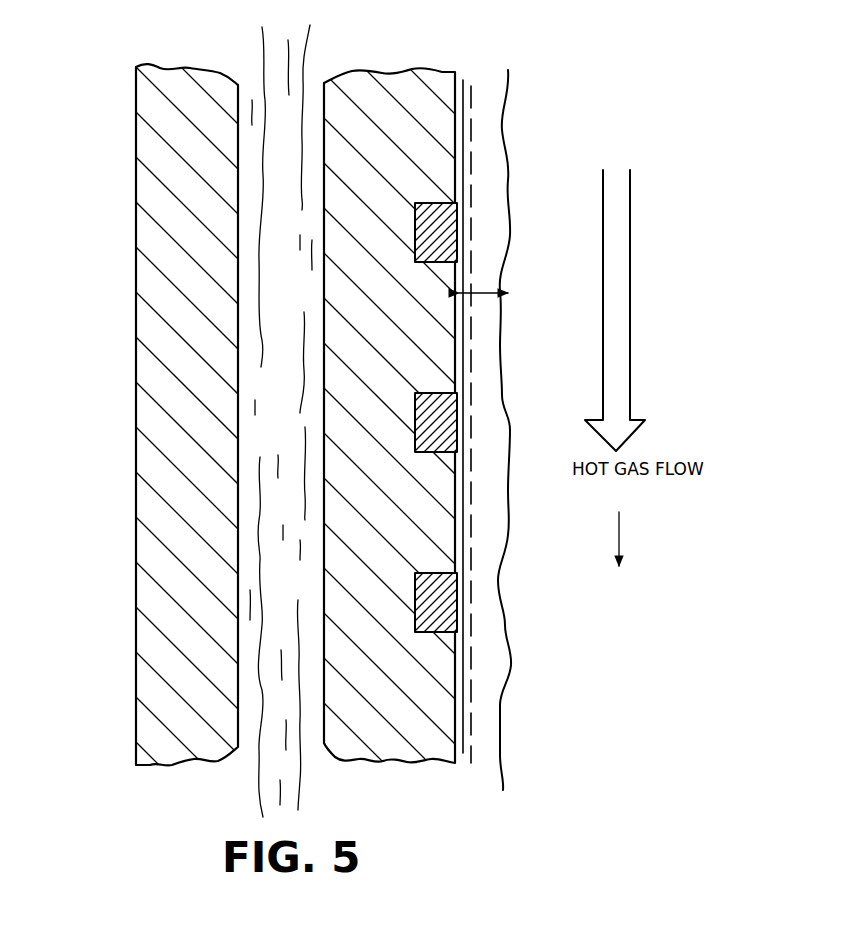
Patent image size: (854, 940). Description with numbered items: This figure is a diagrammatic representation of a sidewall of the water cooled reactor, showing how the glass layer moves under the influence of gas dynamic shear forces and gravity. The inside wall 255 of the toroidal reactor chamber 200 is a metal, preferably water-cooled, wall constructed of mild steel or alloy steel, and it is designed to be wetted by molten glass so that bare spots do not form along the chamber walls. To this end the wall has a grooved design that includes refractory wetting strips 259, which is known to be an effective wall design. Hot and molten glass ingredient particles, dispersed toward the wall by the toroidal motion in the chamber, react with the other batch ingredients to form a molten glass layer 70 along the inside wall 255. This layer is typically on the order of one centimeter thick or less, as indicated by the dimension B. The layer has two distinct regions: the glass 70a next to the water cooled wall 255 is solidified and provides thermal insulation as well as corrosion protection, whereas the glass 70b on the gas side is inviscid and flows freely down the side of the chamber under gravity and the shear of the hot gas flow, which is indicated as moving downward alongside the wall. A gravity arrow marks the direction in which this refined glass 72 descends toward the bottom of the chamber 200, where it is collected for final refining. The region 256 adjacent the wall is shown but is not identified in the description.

The toroidal reactor chamber 200 is at (128, 342).
The inside wall 255 is at (373, 64).
The cooling air gap between walls 256 is at (303, 137).
The refractory wetting strips 259 is at (439, 235).
The molten glass layer 70 is at (515, 657).
The solidified glass 70a is at (470, 90).
The inviscid glass 70b is at (490, 104).
The refined glass 72 is at (620, 544).
The glass layer thickness B is at (483, 280).